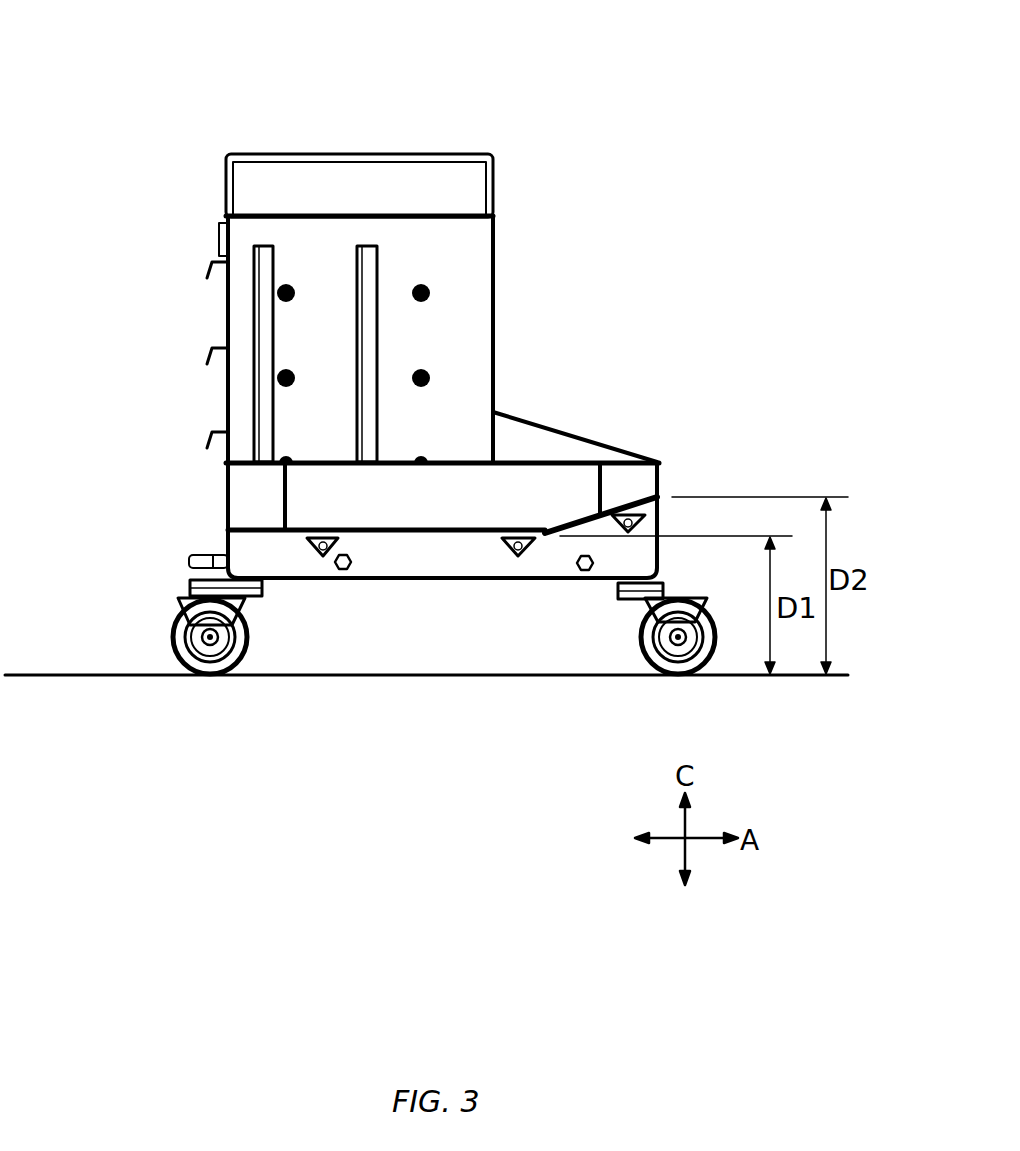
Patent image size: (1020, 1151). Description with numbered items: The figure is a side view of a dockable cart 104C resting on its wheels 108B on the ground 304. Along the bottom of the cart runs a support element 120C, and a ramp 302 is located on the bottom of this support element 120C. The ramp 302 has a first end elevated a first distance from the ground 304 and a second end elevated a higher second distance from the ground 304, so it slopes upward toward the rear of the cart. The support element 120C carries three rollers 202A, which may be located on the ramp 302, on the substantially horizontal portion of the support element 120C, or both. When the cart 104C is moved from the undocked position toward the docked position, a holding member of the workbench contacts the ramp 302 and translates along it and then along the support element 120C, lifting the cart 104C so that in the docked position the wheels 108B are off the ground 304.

The cart 104C is at (542, 74).
The support element 120C is at (266, 528).
The ramp 302 is at (582, 528).
The roller 202A is at (646, 521).
The wheels 108B is at (172, 640).
The ground 304 is at (393, 678).